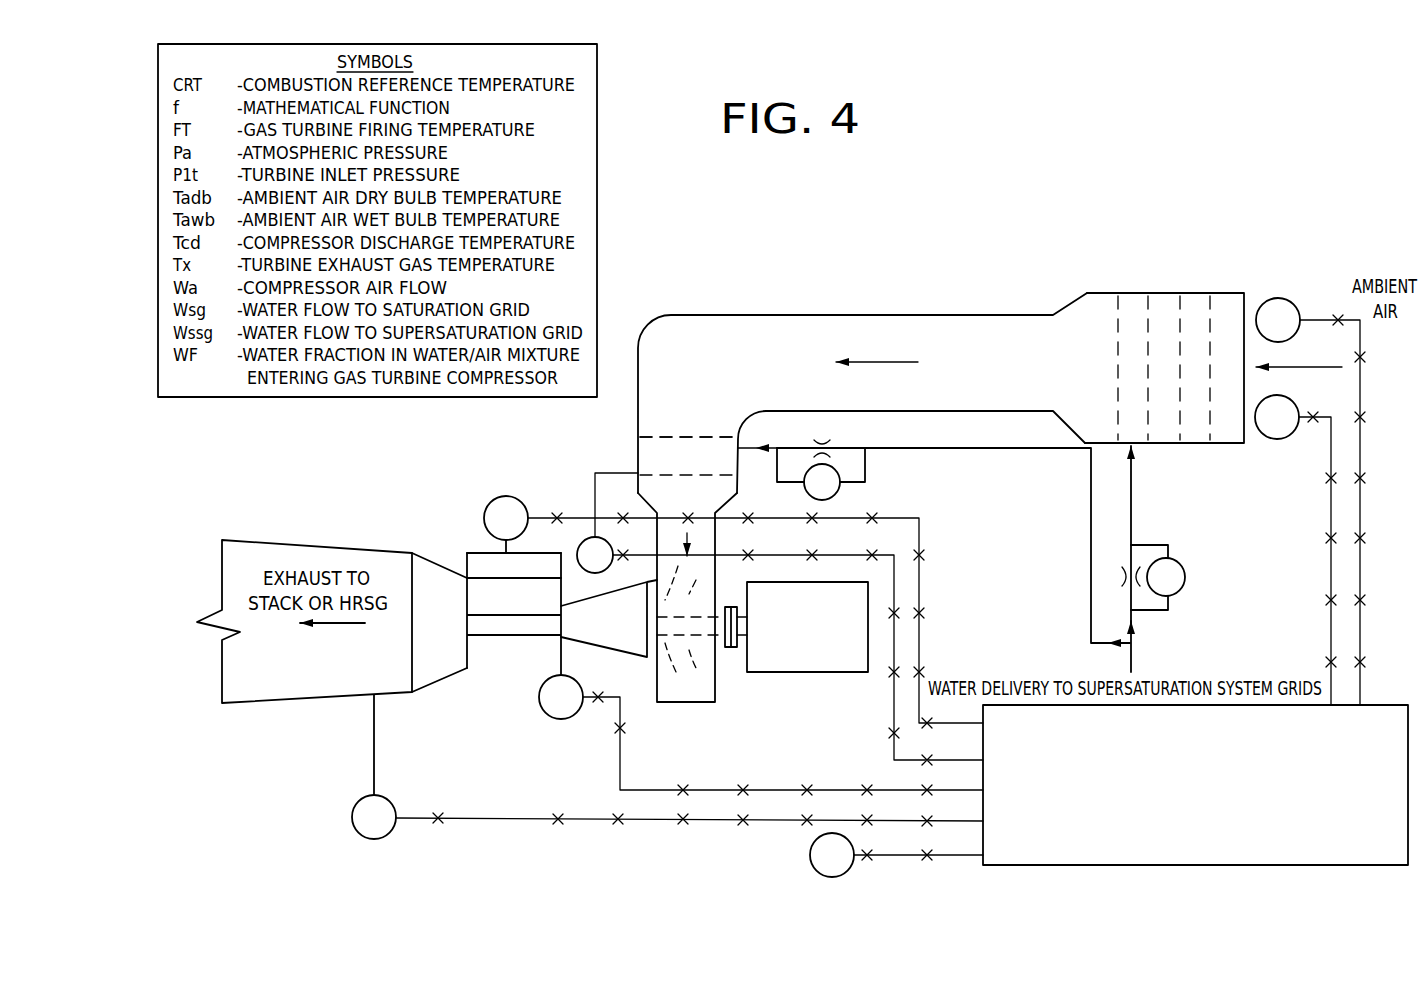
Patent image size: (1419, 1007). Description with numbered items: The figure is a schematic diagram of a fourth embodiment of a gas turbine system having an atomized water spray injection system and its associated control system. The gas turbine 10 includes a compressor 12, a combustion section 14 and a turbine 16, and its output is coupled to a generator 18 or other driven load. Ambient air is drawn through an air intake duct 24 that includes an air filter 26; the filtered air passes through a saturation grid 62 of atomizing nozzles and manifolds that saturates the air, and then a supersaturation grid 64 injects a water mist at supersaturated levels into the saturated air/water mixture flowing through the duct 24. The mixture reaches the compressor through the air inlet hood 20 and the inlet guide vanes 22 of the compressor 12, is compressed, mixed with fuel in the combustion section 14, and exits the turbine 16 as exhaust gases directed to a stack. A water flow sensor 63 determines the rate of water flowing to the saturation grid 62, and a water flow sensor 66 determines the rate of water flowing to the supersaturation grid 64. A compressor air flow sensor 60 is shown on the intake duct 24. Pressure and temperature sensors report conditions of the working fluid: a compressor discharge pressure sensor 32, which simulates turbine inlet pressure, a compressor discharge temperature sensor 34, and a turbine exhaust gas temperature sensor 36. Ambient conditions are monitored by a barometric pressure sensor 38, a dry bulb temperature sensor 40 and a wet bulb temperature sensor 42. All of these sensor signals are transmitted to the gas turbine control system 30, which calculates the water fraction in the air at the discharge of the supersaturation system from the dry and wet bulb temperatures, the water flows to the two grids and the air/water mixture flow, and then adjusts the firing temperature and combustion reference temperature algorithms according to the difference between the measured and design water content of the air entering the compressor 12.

The gas turbine 10 is at (517, 664).
The compressor 12 is at (617, 633).
The combustion section 14 is at (446, 488).
The turbine 16 is at (395, 509).
The generator 18 is at (806, 582).
The air inlet hood 20 is at (715, 704).
The inlet guide vanes 22 is at (624, 658).
The air intake duct 24 is at (697, 409).
The air filter 26 is at (1178, 324).
The gas turbine control system 30 is at (1197, 858).
The compressor discharge pressure sensor 32 is at (504, 489).
The compressor discharge temperature sensor 34 is at (566, 718).
The turbine exhaust gas temperature sensor 36 is at (355, 802).
The barometric pressure sensor 38 is at (810, 853).
The dry bulb temperature sensor 40 is at (1270, 262).
The wet bulb temperature sensor 42 is at (1248, 472).
The compressor air flow sensor 60 is at (586, 533).
The saturation grid 62 is at (1114, 348).
The water flow sensor 63 is at (1186, 574).
The supersaturation grid 64 is at (745, 435).
The water flow sensor 66 is at (805, 492).